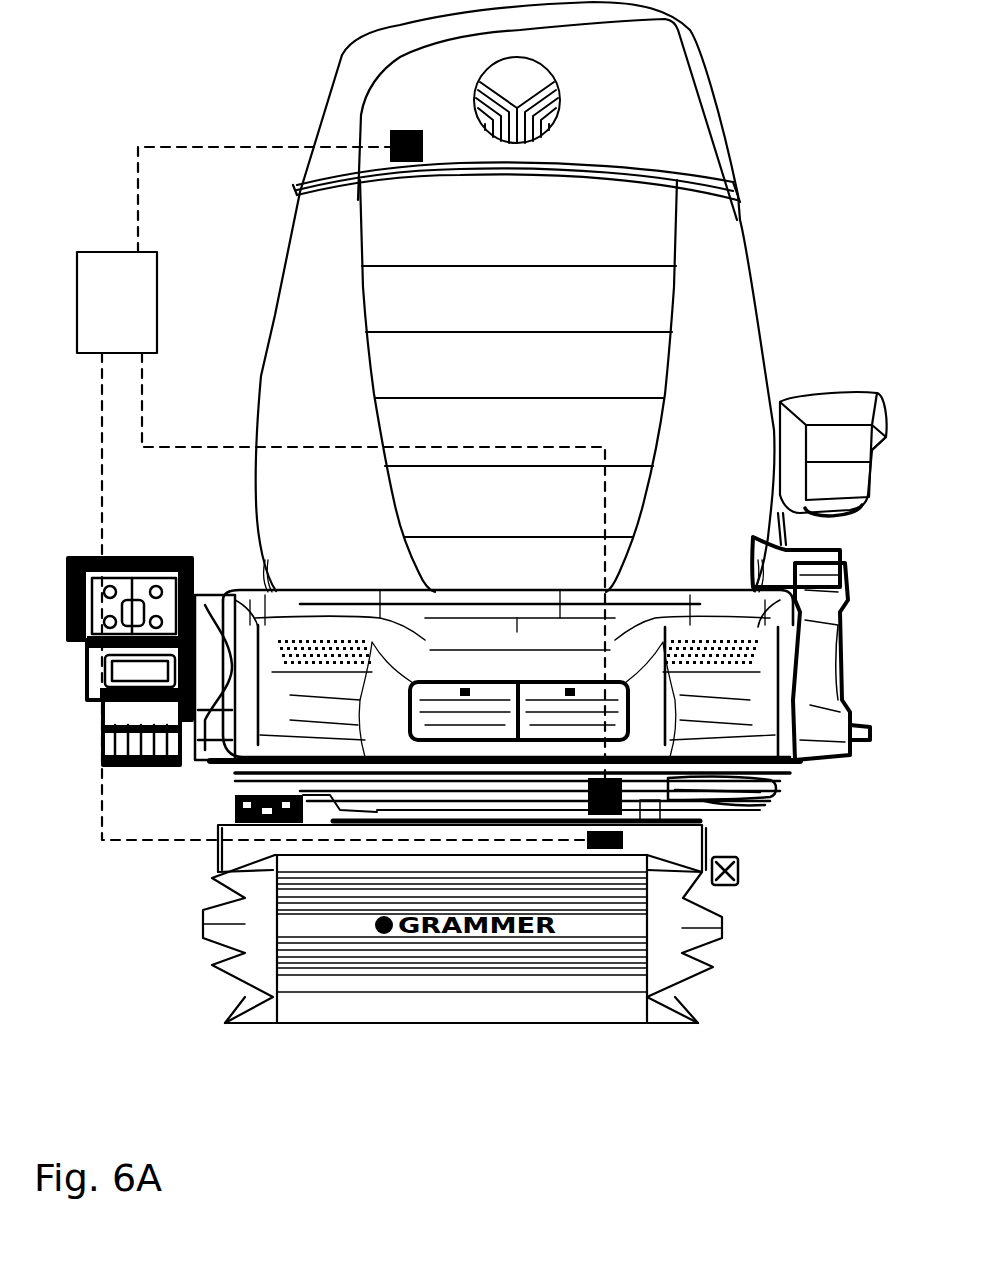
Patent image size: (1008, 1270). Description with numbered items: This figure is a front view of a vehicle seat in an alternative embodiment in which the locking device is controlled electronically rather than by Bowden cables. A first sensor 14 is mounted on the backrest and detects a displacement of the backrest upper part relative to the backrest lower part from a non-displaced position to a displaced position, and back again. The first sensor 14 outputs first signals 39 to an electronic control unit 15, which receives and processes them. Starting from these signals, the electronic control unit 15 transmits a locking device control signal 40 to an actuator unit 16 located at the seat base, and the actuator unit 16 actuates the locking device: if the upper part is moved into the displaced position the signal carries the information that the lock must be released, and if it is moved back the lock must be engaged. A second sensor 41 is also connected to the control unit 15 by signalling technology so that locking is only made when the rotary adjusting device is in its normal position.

The first sensor 14 is at (396, 130).
The electronic control unit 15 is at (89, 272).
The actuator unit 16 is at (770, 797).
The first signals 39 is at (173, 147).
The locking device control signal 40 is at (178, 447).
The second sensor 41 is at (623, 845).